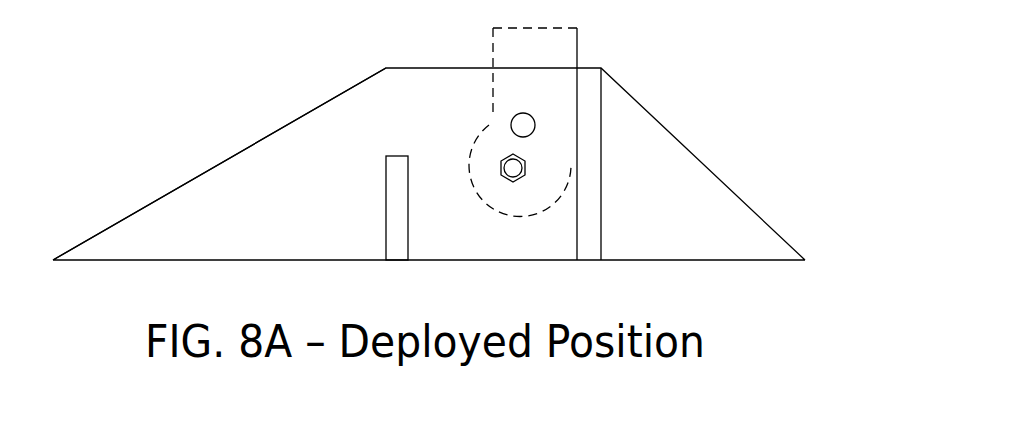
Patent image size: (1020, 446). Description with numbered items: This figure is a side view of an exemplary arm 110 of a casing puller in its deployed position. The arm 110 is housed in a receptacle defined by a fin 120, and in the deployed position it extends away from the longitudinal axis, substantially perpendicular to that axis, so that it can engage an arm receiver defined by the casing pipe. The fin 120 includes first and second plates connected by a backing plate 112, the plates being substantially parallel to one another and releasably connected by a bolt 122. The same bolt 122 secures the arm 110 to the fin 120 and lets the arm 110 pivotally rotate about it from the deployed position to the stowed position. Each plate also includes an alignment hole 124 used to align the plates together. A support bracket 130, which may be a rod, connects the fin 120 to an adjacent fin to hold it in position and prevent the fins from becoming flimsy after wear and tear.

The arm 110 is at (493, 50).
The backing plate 112 is at (602, 135).
The fin 120 is at (246, 144).
The bolt 122 is at (508, 155).
The alignment hole 124 is at (512, 113).
The support bracket 130 is at (386, 208).